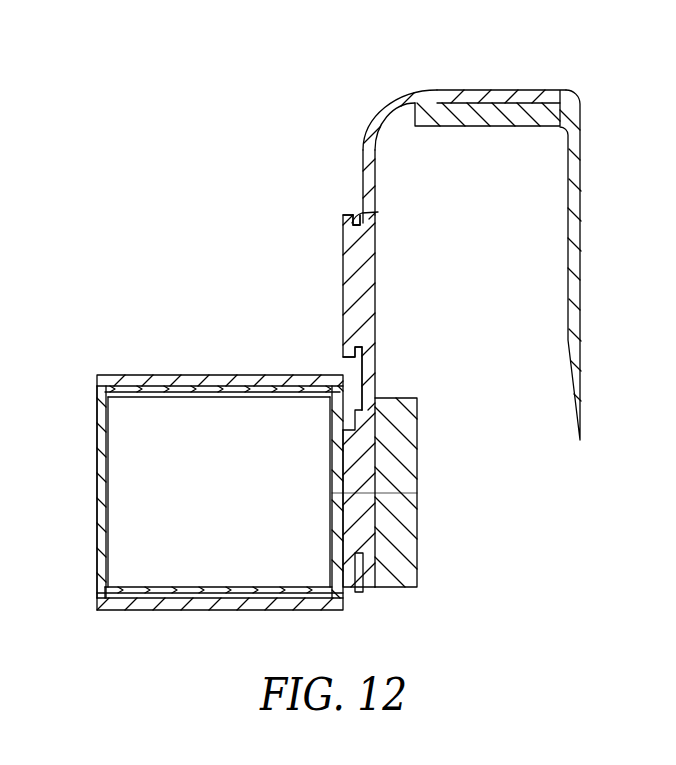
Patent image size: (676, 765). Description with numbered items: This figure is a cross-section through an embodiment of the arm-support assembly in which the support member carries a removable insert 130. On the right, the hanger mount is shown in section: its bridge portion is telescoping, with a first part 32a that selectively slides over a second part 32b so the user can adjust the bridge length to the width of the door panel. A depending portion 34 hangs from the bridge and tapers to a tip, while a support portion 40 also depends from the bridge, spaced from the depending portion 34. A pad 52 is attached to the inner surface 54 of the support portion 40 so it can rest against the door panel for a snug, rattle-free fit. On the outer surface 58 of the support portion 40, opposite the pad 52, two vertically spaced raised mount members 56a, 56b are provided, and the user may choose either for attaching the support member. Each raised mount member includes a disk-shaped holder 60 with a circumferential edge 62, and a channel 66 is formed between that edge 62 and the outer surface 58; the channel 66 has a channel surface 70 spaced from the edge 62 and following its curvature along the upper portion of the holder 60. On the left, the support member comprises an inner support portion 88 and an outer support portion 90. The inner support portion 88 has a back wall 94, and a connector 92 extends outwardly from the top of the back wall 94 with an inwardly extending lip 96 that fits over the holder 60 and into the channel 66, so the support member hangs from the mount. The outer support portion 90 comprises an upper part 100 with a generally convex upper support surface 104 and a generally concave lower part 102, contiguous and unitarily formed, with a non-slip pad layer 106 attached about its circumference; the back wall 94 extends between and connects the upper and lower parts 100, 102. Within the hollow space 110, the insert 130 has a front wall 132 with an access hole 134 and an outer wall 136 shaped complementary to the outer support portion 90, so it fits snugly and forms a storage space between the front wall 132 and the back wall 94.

The first part 32a is at (540, 106).
The second part 32b is at (457, 90).
The depending portion 34 is at (582, 262).
The support portion 40 is at (370, 167).
The inner surface 54 is at (380, 190).
The channel 66 is at (357, 203).
The circumferential edge 62 is at (352, 215).
The disk-shaped holder 60 is at (342, 217).
The raised mount member 56a is at (340, 267).
The channel surface 70 is at (378, 212).
The outer surface 58 is at (358, 367).
The connector 92 is at (364, 405).
The lip 96 is at (353, 425).
The pad 52 is at (402, 458).
The raised mount member 56b is at (362, 511).
The back wall 94 is at (338, 461).
The inner support portion 88 is at (328, 500).
The hollow space 110 is at (243, 493).
The outer wall 136 is at (202, 586).
The lower part 102 is at (195, 600).
The non-slip pad layer 106 is at (137, 388).
The outer support portion 90 is at (95, 368).
The upper support surface 104 is at (168, 370).
The upper part 100 is at (234, 378).
The removable insert 130 is at (94, 427).
The access hole 134 is at (103, 456).
The front wall 132 is at (102, 562).